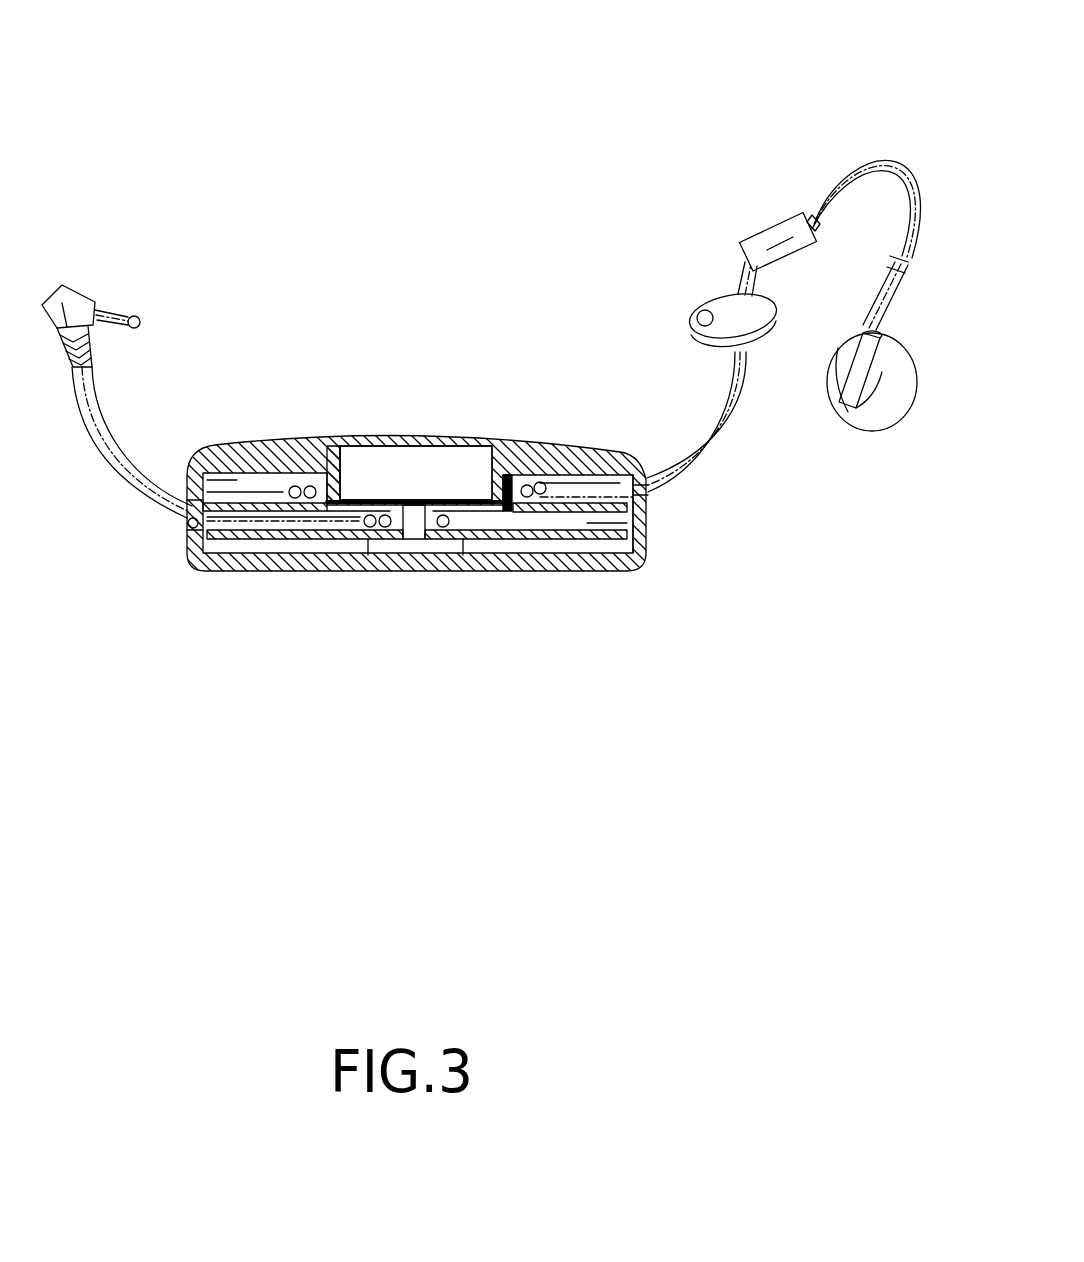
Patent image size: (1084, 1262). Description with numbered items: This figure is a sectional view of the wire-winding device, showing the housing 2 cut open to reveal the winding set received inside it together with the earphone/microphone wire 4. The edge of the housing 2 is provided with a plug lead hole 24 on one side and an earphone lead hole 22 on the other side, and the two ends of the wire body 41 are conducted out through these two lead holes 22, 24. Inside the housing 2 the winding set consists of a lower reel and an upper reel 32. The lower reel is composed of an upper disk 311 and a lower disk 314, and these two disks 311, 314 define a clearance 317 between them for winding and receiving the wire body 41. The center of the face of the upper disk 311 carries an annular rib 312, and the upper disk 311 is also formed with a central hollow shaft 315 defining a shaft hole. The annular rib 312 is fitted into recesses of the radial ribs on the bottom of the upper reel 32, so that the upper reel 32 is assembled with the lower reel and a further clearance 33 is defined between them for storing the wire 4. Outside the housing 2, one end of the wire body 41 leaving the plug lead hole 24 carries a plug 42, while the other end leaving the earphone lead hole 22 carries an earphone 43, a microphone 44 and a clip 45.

The housing 2 is at (590, 573).
The earphone lead hole 22 is at (650, 497).
The plug lead hole 24 is at (187, 528).
The upper reel 32 is at (408, 446).
The clearance 33 is at (237, 492).
The upper disk 311 is at (533, 513).
The annular rib 312 is at (328, 480).
The lower disk 314 is at (555, 540).
The central hollow shaft 315 is at (415, 530).
The clearance 317 is at (647, 530).
The earphone/microphone wire 4 is at (832, 165).
The wire body 41 is at (716, 436).
The plug 42 is at (90, 280).
The earphone 43 is at (873, 420).
The microphone 44 is at (772, 236).
The clip 45 is at (730, 313).